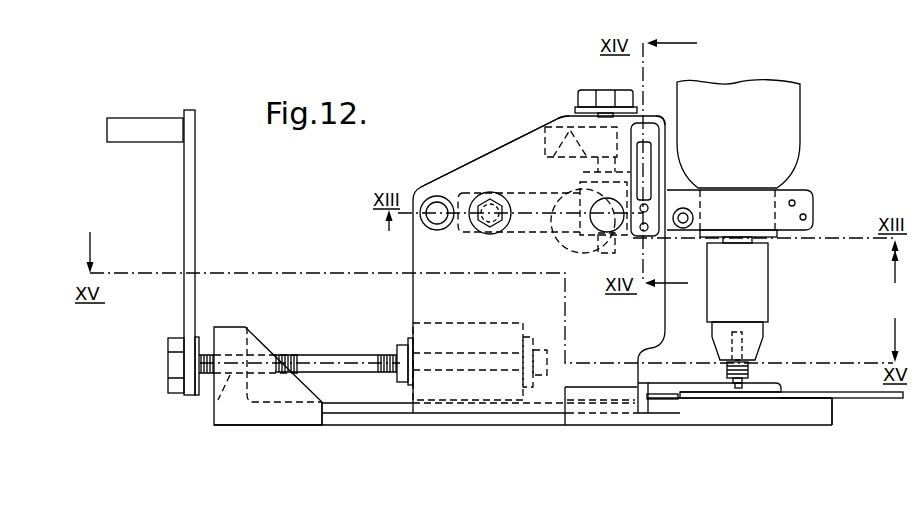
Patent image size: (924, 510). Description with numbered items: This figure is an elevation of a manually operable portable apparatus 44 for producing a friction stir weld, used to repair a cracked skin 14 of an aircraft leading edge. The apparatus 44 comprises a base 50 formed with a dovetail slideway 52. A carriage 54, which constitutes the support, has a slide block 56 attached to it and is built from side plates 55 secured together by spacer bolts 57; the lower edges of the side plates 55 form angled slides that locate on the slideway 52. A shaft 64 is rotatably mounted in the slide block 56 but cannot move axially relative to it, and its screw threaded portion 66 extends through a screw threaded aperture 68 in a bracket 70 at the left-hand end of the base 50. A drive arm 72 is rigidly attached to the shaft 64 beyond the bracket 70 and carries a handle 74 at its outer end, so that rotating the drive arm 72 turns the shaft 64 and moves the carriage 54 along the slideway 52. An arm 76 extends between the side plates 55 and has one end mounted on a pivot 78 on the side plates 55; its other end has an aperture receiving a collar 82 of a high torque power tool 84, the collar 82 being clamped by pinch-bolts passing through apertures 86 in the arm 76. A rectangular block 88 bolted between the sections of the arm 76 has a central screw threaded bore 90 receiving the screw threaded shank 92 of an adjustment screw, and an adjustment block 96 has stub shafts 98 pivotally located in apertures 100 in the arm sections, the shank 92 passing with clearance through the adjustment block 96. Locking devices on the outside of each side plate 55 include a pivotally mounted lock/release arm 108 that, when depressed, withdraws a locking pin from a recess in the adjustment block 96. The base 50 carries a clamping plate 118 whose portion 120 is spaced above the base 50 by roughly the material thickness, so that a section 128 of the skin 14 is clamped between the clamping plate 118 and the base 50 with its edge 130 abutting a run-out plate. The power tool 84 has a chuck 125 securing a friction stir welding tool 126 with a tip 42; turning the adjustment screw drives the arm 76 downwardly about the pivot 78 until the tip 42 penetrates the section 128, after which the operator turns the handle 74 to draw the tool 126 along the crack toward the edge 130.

The skin 14 is at (886, 400).
The tip 42 is at (740, 400).
The apparatus 44 is at (501, 106).
The base 50 is at (483, 429).
The dovetail slideway 52 is at (402, 405).
The carriage 54 is at (436, 181).
The side plates 55 is at (458, 181).
The slide block 56 is at (462, 332).
The spacer bolts 57 is at (443, 230).
The shaft 64 is at (364, 322).
The screw threaded portion 66 is at (288, 352).
The screw threaded aperture 68 is at (213, 403).
The bracket 70 is at (233, 327).
The drive arm 72 is at (195, 196).
The handle 74 is at (146, 130).
The arm 76 is at (821, 187).
The pivot 78 is at (479, 193).
The collar 82 is at (775, 238).
The high torque power tool 84 is at (775, 112).
The apertures 86 is at (806, 217).
The rectangular block 88 is at (563, 121).
The central screw threaded bore 90 is at (548, 124).
The screw threaded shank 92 is at (646, 112).
The adjustment block 96 is at (577, 203).
The stub shafts 98 is at (568, 240).
The apertures 100 is at (588, 243).
The lock/release arm 108 is at (659, 162).
The clamping plate 118 is at (655, 374).
The portion 120 is at (700, 395).
The chuck 125 is at (757, 288).
The friction stir welding tool 126 is at (748, 382).
The section 128 is at (773, 400).
The edge 130 is at (683, 401).